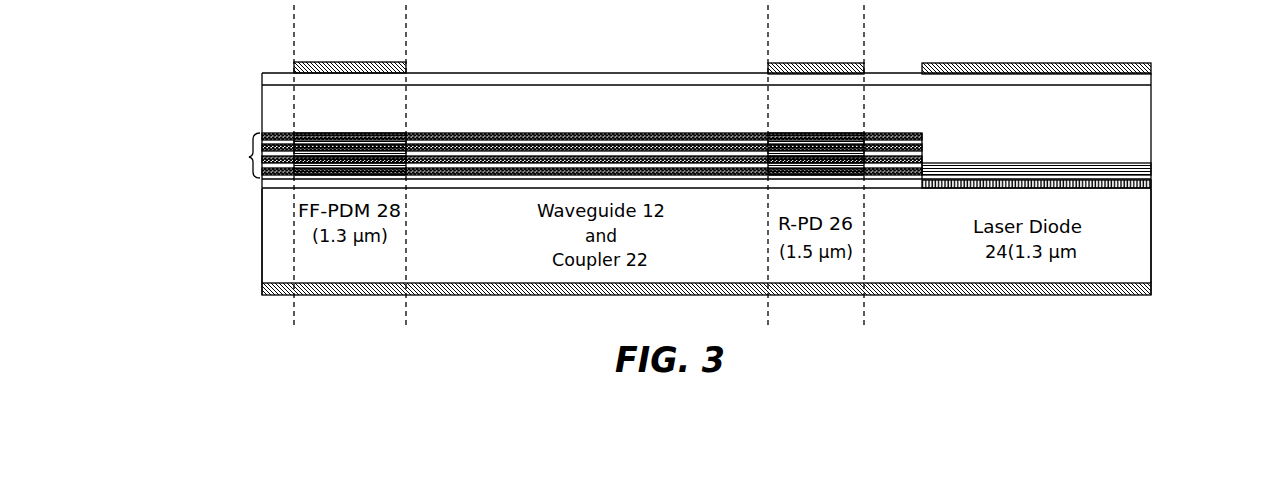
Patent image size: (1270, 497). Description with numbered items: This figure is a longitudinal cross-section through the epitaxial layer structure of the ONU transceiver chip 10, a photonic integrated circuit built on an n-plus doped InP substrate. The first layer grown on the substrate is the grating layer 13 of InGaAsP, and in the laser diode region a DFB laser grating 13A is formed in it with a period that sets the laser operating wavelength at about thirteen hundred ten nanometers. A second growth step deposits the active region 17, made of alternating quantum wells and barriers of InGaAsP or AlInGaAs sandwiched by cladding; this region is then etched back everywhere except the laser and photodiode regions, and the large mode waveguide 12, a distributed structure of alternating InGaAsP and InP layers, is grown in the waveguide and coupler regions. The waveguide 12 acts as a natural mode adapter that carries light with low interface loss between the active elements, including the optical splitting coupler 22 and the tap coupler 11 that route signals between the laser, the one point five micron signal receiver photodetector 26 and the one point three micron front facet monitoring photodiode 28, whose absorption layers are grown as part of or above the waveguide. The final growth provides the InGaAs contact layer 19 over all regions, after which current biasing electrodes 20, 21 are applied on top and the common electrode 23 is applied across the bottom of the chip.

The ONU transceiver chip 10 is at (1106, 40).
The tap coupler 11 is at (280, 247).
The large mode waveguide 12 is at (572, 156).
The grating layer 13 is at (262, 183).
The DFB laser grating 13A is at (1107, 188).
The active region 17 is at (1152, 173).
The contact layer 19 is at (1138, 82).
The current biasing electrode 20 is at (1016, 63).
The current biasing electrode 21 is at (790, 63).
The optical splitting coupler 22 is at (323, 63).
The common electrode 23 is at (262, 291).
The signal receiver photodetector 26 is at (807, 133).
The front facet monitoring photodiode 28 is at (343, 133).